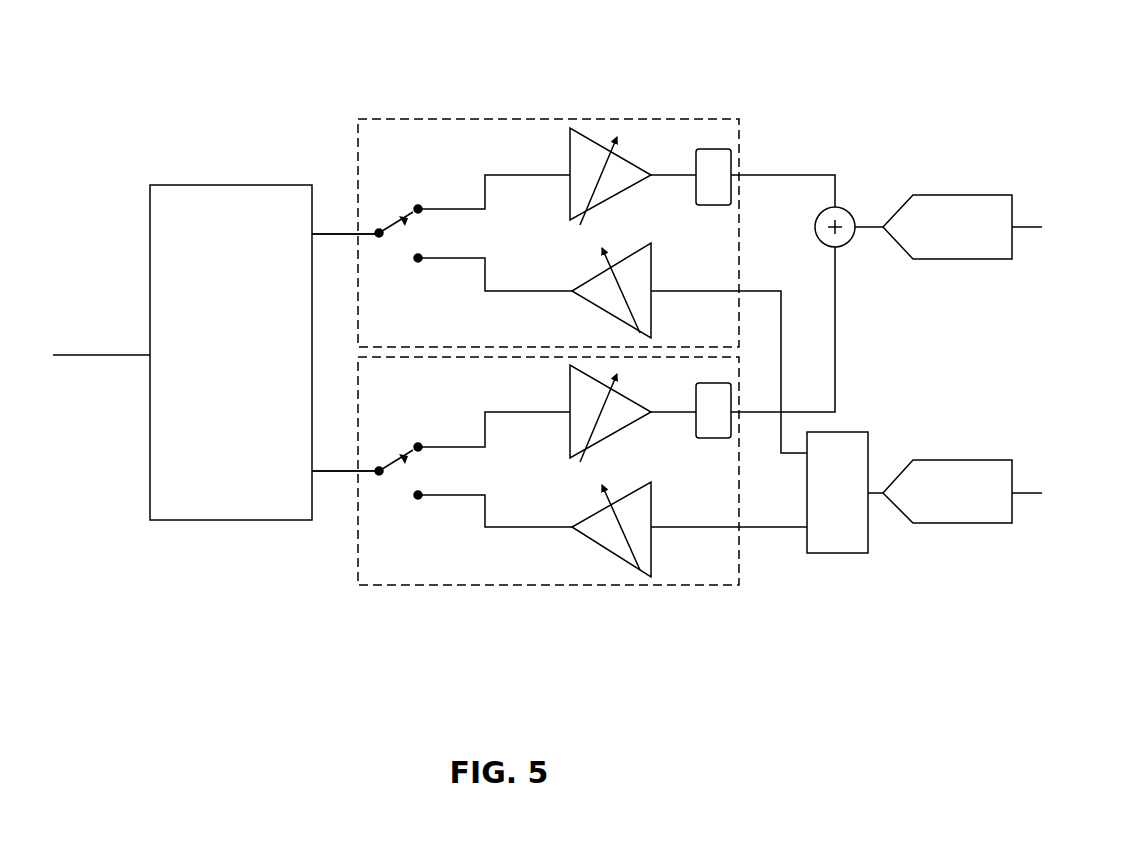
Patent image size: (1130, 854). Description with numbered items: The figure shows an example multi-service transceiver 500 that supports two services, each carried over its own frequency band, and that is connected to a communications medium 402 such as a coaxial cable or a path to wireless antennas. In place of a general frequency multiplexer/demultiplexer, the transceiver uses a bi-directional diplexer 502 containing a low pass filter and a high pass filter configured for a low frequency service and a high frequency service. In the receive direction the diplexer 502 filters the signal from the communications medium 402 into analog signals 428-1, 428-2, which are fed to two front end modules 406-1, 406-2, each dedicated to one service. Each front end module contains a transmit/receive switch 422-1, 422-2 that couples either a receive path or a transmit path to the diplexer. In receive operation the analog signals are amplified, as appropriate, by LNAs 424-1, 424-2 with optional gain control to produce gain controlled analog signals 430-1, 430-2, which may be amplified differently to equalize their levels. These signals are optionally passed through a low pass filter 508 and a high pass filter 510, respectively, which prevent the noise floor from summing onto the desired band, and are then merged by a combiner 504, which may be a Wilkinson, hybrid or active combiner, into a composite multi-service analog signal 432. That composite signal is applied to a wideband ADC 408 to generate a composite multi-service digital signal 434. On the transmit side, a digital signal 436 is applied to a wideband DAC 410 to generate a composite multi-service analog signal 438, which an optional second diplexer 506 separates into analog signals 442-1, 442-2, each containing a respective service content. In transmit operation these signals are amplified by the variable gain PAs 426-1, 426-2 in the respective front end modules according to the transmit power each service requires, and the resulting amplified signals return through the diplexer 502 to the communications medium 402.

The multi-service transceiver 500 is at (1090, 45).
The communications medium 402 is at (95, 357).
The diplexer 502 is at (232, 521).
The analog signal 428-1 is at (338, 234).
The analog signal 428-2 is at (340, 475).
The front end module 406-1 is at (598, 119).
The front end module 406-2 is at (605, 586).
The transmit/receive switch 422-1 is at (392, 206).
The transmit/receive switch 422-2 is at (392, 502).
The LNA 424-1 is at (623, 188).
The PA 426-1 is at (651, 255).
The LNA 424-2 is at (623, 428).
The PA 426-2 is at (651, 494).
The low pass filter 508 is at (696, 158).
The high pass filter 510 is at (696, 393).
The gain controlled analog signal 430-1 is at (782, 176).
The gain controlled analog signal 430-2 is at (808, 412).
The analog signal 442-1 is at (764, 290).
The analog signal 442-2 is at (765, 525).
The combiner 504 is at (850, 212).
The composite multi-service analog signal 432 is at (868, 231).
The ADC 408 is at (948, 195).
The composite multi-service digital signal 434 is at (1027, 230).
The second diplexer 506 is at (847, 553).
The composite multi-service analog signal 438 is at (873, 488).
The DAC 410 is at (930, 523).
The digital signal 436 is at (1028, 495).